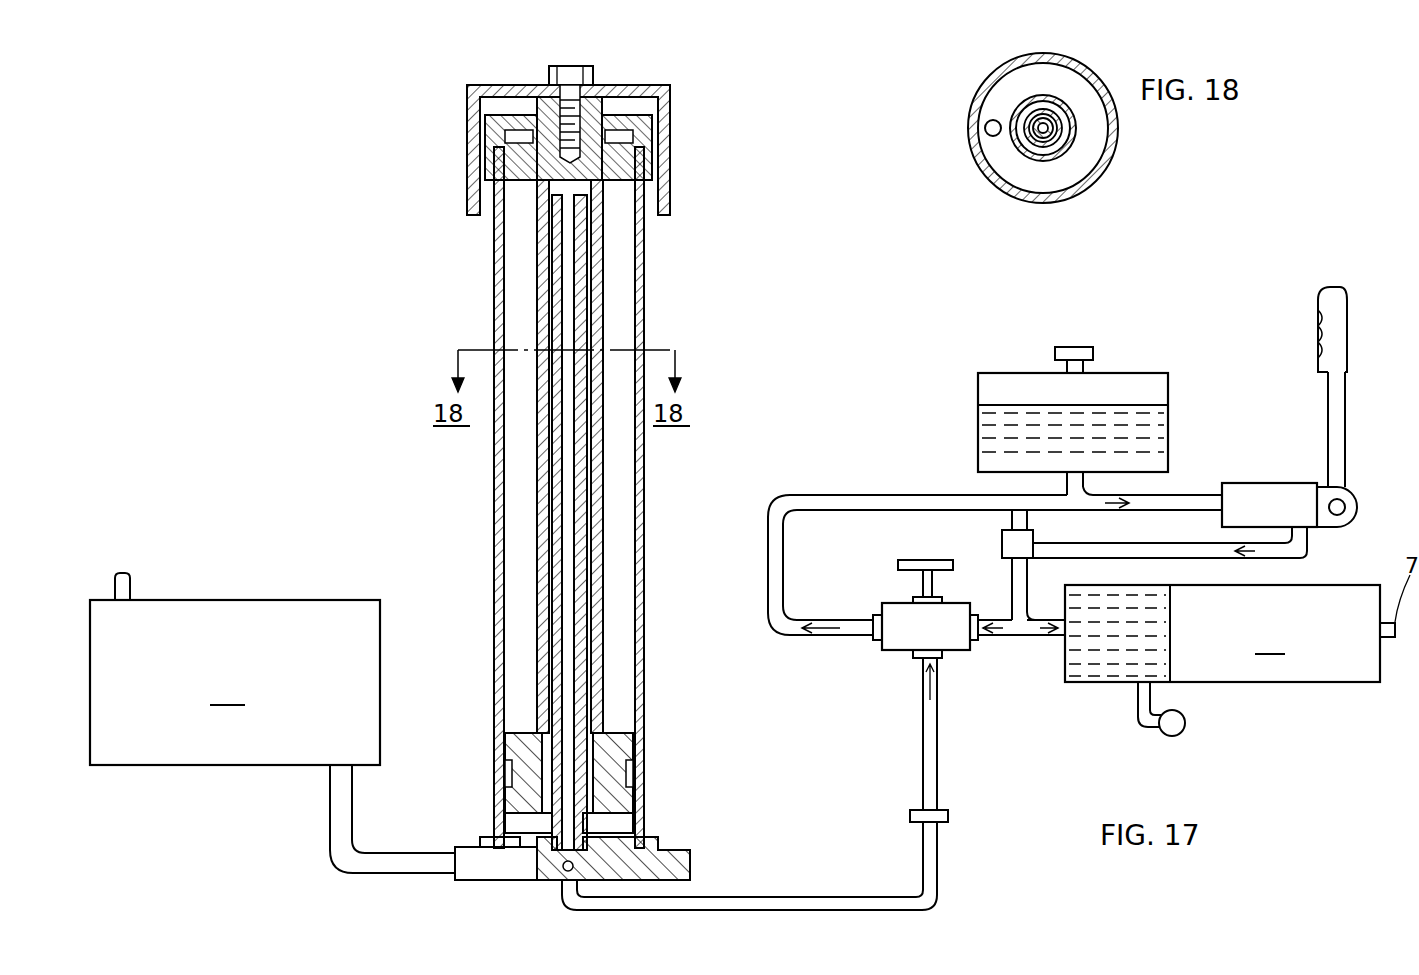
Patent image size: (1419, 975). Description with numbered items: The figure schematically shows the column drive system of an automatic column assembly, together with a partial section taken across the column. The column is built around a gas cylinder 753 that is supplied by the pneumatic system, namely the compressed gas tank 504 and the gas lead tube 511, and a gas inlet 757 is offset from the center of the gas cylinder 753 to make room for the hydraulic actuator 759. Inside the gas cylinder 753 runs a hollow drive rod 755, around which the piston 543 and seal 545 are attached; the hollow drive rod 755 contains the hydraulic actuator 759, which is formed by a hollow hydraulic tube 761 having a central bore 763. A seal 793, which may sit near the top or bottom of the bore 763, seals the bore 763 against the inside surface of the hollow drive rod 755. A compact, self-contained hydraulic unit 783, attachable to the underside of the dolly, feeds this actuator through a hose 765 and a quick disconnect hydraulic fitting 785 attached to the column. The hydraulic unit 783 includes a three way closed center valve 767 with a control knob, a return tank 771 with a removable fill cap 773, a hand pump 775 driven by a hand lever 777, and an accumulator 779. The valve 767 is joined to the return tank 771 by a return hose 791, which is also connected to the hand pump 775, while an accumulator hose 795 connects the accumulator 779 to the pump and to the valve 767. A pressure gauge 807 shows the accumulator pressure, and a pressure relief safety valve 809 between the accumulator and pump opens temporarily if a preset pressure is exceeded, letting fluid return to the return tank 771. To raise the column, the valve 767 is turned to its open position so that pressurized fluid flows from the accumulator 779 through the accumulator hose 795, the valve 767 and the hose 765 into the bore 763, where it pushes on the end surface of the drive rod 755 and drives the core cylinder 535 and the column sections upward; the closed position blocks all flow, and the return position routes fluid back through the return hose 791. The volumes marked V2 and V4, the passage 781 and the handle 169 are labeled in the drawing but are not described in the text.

In FIG. 17, the compressed gas tank 504 is at (350, 575).
In FIG. 17, the gas lead tube 511 is at (130, 578).
In FIG. 17, the core cylinder 535 is at (672, 157).
In FIG. 17, the seal 793 is at (590, 200).
In FIG. 17, the gas cylinder 753 is at (645, 455).
In FIG. 18, the gas cylinder 753 is at (1120, 138).
In FIG. 17, the hollow drive rod 755 is at (604, 512).
In FIG. 18, the hollow drive rod 755 is at (1070, 150).
In FIG. 17, the hydraulic tube 761 is at (588, 560).
In FIG. 18, the hydraulic tube 761 is at (1048, 145).
In FIG. 17, the central bore 763 is at (567, 615).
In FIG. 18, the central bore 763 is at (1030, 150).
In FIG. 17, the gas inlet 757 is at (480, 846).
In FIG. 18, the gas inlet 757 is at (985, 128).
In FIG. 18, the hydraulic actuator 759 is at (1022, 103).
In FIG. 17, the piston 543 is at (636, 805).
In FIG. 17, the seal 545 is at (637, 770).
In FIG. 17, the cylinder hose 765 is at (855, 895).
In FIG. 17, the pipe 781 is at (938, 712).
In FIG. 17, the quick disconnect hydraulic fitting 785 is at (955, 815).
In FIG. 17, the three way closed center valve 767 is at (900, 652).
In FIG. 17, the valve handle 169 is at (897, 566).
In FIG. 17, the return hose 791 is at (780, 632).
In FIG. 17, the accumulator hose 795 is at (1000, 598).
In FIG. 17, the pressure relief safety valve 809 is at (1002, 545).
In FIG. 17, the return tank 771 is at (977, 410).
In FIG. 17, the fill cap 773 is at (1070, 346).
In FIG. 17, the hydraulic unit 783 is at (1178, 340).
In FIG. 17, the hand pump 775 is at (1280, 462).
In FIG. 17, the hand lever 777 is at (1328, 420).
In FIG. 17, the accumulator 779 is at (1302, 670).
In FIG. 17, the pressure gauge 807 is at (1185, 728).
In FIG. 17, the volume V4 is at (600, 838).
In FIG. 17, the volume V2 is at (478, 645).